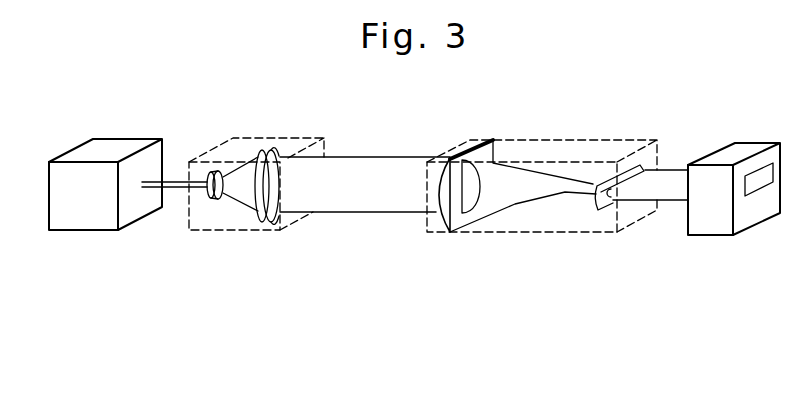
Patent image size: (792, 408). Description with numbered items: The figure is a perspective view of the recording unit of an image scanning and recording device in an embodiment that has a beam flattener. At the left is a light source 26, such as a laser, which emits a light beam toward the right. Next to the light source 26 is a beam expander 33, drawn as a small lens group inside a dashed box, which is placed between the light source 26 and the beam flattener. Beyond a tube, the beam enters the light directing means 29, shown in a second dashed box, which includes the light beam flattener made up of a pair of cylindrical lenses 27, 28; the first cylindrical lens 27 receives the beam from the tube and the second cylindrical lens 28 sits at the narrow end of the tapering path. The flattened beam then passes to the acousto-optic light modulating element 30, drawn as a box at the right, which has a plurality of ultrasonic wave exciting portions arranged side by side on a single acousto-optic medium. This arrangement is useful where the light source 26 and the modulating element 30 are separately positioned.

The light source 26 is at (88, 221).
The beam expander 33 is at (245, 232).
The cylindrical lens 27 is at (445, 231).
The light directing means 29 is at (508, 232).
The cylindrical lens 28 is at (605, 215).
The acousto-optic light modulating element 30 is at (717, 235).